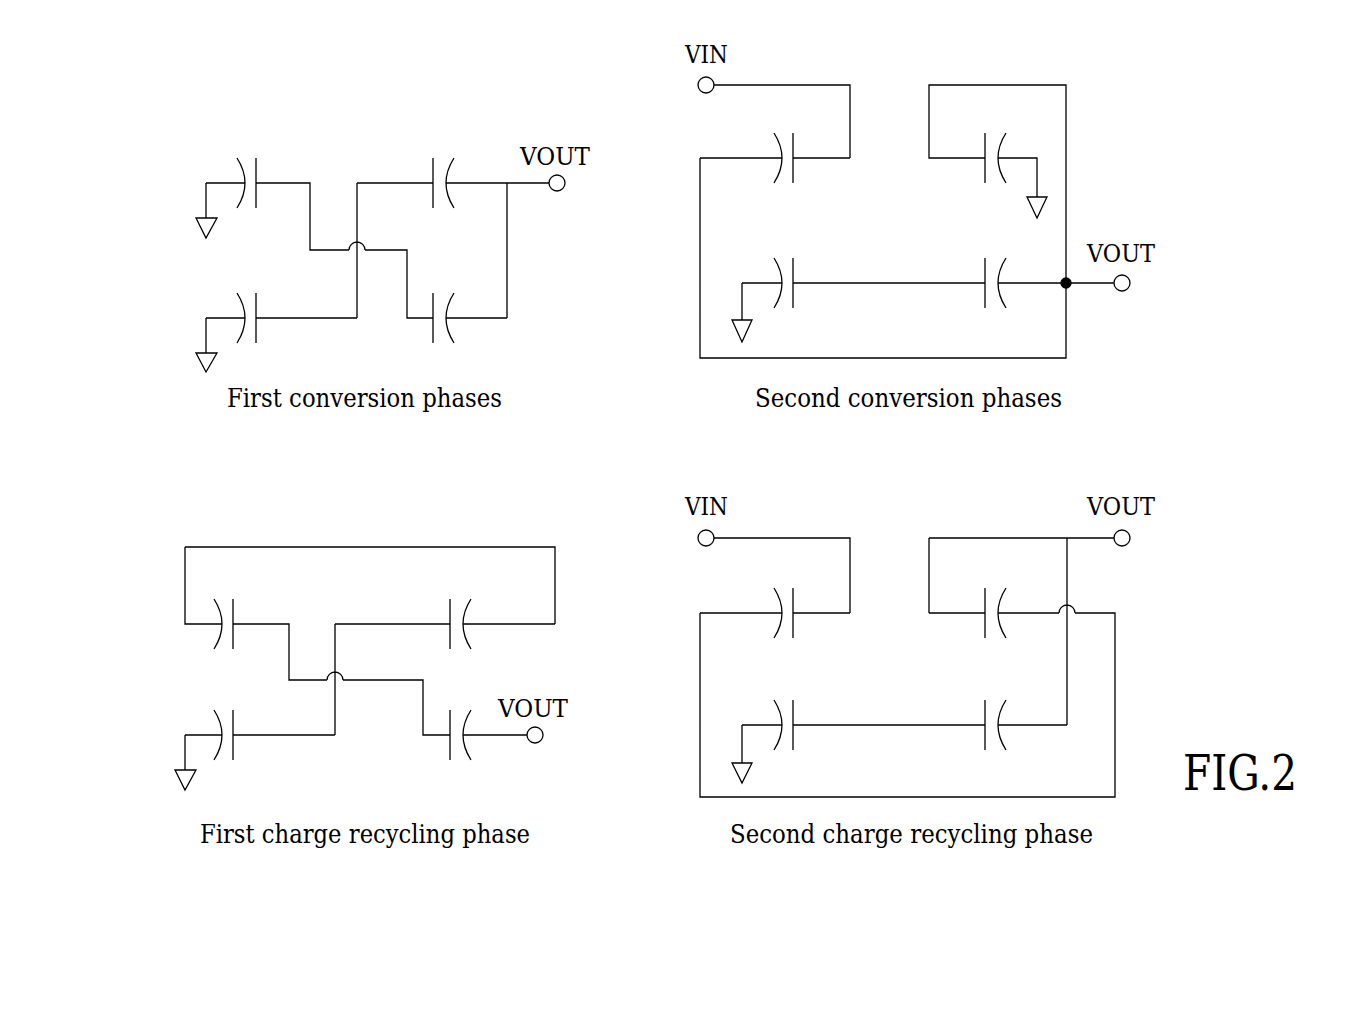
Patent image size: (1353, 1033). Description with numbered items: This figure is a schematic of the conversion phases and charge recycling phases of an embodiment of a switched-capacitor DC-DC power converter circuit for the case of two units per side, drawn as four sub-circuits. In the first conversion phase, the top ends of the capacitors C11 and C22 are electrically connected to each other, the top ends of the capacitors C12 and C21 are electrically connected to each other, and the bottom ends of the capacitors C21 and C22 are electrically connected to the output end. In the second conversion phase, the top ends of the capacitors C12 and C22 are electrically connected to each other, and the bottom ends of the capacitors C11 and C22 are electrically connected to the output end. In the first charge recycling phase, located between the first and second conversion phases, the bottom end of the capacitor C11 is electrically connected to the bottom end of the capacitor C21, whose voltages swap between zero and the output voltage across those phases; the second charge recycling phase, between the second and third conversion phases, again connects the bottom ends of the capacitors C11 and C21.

The capacitor C11 is at (501, 374).
The capacitor C12 is at (501, 492).
The capacitor C21 is at (717, 373).
The capacitor C22 is at (717, 492).